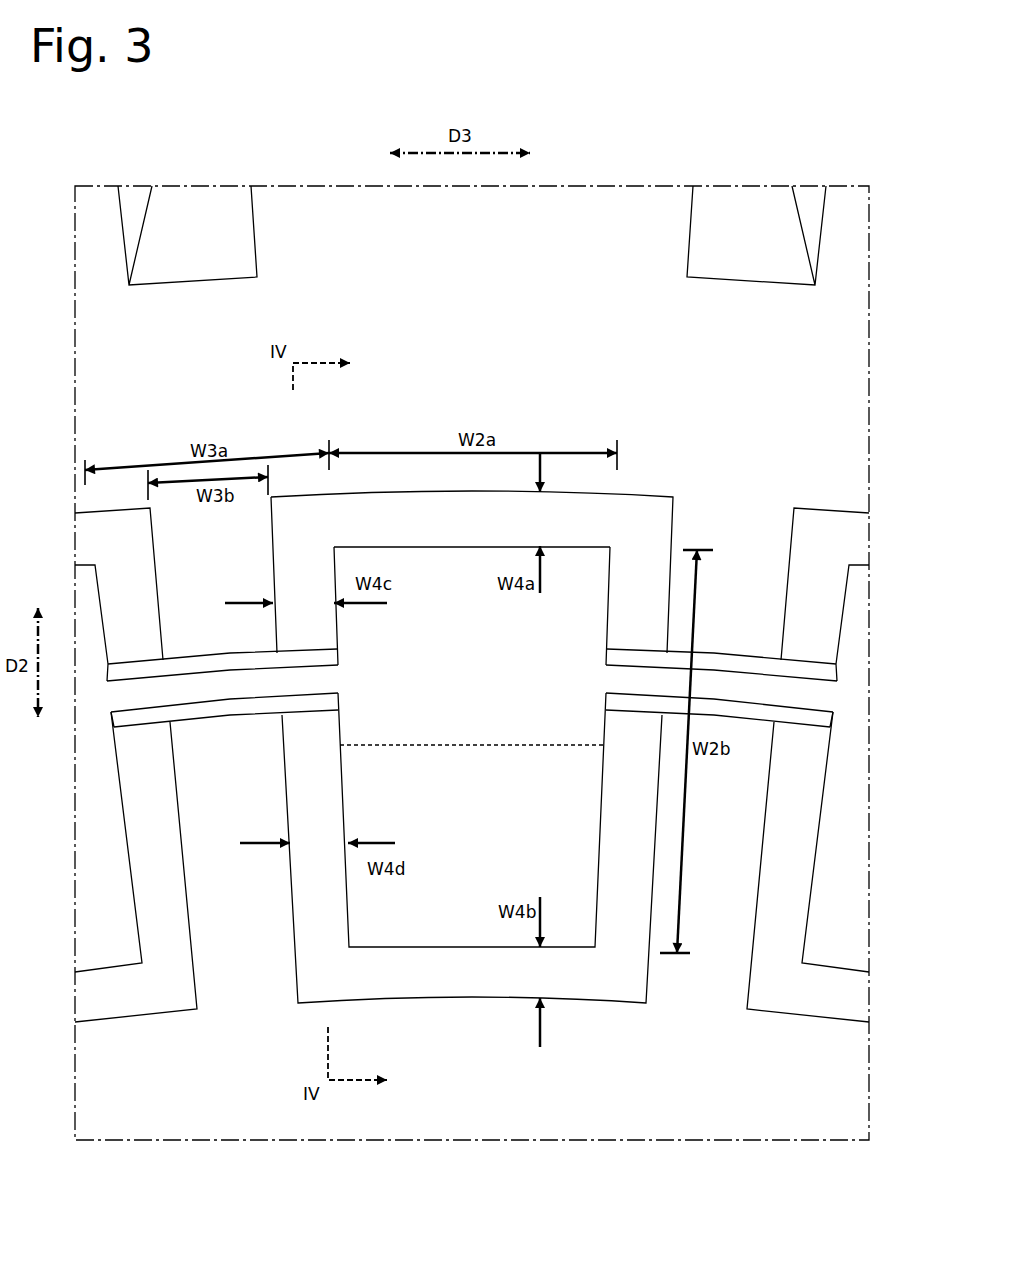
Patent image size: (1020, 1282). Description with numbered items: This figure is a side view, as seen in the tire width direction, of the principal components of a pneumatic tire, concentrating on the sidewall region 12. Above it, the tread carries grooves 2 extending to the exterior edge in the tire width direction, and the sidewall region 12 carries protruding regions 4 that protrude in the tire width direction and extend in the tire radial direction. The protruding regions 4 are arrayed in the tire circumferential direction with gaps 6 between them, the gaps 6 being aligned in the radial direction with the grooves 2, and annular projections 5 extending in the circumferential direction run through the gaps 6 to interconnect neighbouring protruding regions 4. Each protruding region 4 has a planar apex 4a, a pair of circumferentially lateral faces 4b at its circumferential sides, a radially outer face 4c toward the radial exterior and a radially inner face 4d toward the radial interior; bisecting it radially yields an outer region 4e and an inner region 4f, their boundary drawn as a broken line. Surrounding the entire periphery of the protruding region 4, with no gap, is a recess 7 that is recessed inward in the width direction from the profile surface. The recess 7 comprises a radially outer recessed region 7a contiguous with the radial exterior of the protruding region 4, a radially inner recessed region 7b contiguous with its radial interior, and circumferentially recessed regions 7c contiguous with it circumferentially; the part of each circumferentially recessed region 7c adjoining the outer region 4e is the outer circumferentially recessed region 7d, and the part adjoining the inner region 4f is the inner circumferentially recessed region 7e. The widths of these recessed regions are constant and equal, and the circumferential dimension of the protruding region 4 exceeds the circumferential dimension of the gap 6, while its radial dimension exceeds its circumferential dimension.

The groove 2 is at (195, 210).
The protruding region 4 is at (113, 1022).
The apex 4a is at (415, 932).
The circumferentially lateral face 4b is at (347, 882).
The radially outer face 4c is at (610, 547).
The radially inner face 4d is at (568, 950).
The outer region 4e is at (350, 630).
The inner region 4f is at (355, 790).
The annular projection 5 is at (187, 665).
The gap 6 is at (212, 539).
The recess 7 is at (158, 993).
The radially outer recessed region 7a is at (477, 513).
The radially inner recessed region 7b is at (503, 967).
The circumferentially recessed region 7c is at (288, 745).
The outer circumferentially recessed region 7d is at (297, 567).
The inner circumferentially recessed region 7e is at (315, 913).
The sidewall region 12 is at (823, 462).